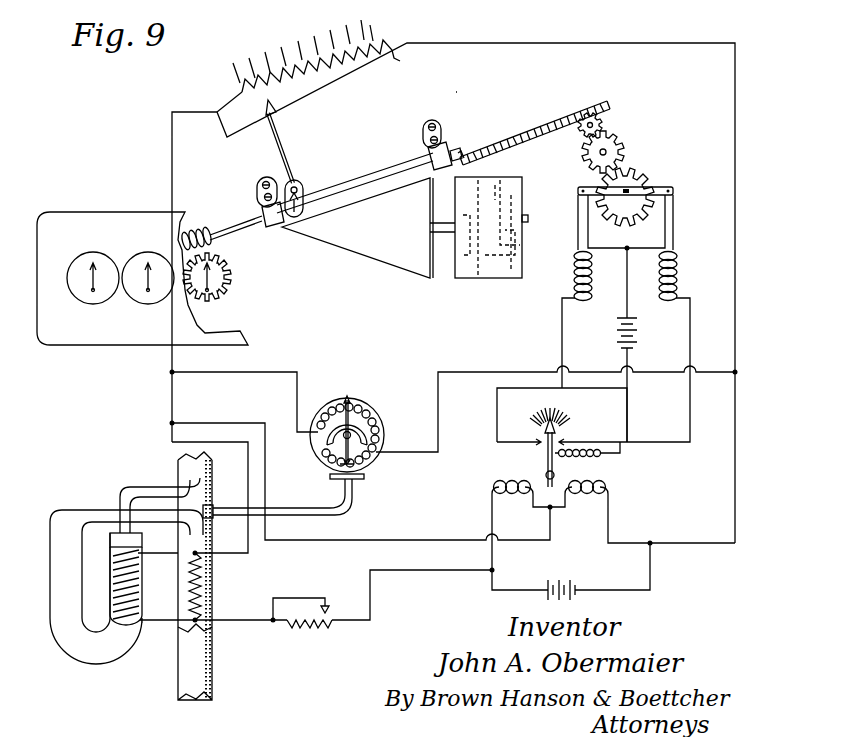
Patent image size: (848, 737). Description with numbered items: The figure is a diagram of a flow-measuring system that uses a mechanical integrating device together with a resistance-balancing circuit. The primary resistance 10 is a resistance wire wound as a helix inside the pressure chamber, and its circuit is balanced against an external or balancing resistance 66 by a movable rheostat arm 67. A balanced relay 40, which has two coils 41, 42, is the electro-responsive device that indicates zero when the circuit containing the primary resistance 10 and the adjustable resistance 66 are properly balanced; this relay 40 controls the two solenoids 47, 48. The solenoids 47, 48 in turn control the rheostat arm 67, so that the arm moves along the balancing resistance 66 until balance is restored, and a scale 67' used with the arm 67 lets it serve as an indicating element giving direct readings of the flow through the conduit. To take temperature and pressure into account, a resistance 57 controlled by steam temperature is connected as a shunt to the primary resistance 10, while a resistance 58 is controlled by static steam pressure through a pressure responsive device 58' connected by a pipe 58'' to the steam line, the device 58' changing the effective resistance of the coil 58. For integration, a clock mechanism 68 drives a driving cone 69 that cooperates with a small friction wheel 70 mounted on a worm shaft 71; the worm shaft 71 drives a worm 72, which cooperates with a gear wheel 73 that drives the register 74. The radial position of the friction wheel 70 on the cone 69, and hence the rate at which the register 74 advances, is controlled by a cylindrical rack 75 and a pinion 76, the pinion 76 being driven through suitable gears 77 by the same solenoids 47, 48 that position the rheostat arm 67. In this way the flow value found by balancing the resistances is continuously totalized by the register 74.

The resistance wire 10 is at (131, 596).
The balanced relay 40 is at (603, 470).
The relay coil 41 is at (513, 497).
The relay coil 42 is at (597, 498).
The solenoid winding 47 is at (574, 266).
The solenoid winding 48 is at (677, 271).
The resistance 57 is at (205, 590).
The resistance 58 is at (357, 430).
The pressure responsive device 58' is at (305, 495).
The pipe 58'' is at (173, 506).
The external or balancing resistance 66 is at (319, 59).
The rheostat arm 67 is at (293, 141).
The scale 67' is at (389, 25).
The clock mechanism 68 is at (493, 274).
The driving cone 69 is at (388, 245).
The friction wheel 70 is at (300, 186).
The worm shaft 71 is at (228, 230).
The worm 72 is at (192, 232).
The gear wheel 73 is at (232, 292).
The register 74 is at (153, 325).
The cylindrical rack 75 is at (498, 132).
The pinion 76 is at (601, 125).
The gears 77 is at (614, 153).